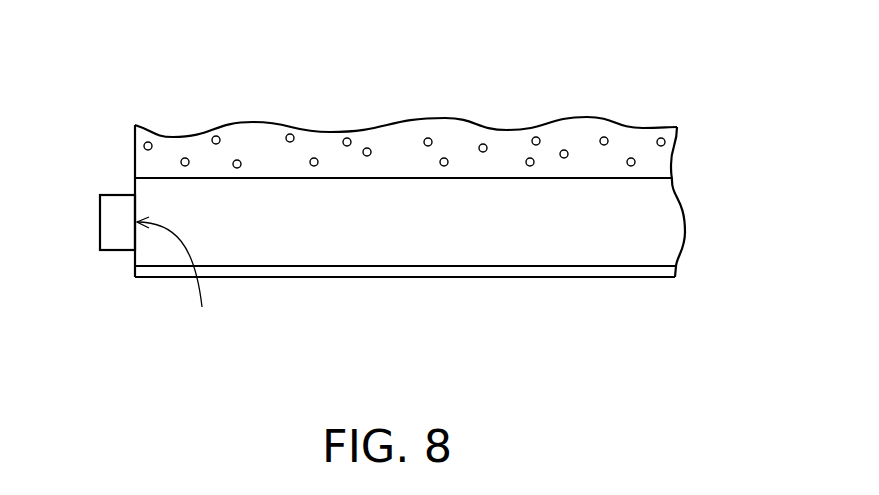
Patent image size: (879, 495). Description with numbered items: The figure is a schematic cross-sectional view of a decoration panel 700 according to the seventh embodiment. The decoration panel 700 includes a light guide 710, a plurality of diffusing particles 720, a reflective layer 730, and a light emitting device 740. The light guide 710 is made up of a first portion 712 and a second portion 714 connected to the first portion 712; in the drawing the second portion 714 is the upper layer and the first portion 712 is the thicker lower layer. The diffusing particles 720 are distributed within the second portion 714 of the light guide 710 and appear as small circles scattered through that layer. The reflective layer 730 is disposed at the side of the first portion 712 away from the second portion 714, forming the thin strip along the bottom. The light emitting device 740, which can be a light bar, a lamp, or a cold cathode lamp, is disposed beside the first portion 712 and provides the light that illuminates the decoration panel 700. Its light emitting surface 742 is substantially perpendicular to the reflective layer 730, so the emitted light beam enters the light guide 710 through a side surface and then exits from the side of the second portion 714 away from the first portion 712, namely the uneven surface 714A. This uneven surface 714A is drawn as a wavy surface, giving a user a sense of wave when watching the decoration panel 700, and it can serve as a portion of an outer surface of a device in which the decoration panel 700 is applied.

The decoration panel 700 is at (725, 347).
The light guide 710 is at (762, 141).
The first portion 712 is at (658, 238).
The second portion 714 is at (658, 163).
The uneven surface 714A is at (497, 128).
The diffusing particles 720 is at (217, 134).
The reflective layer 730 is at (502, 243).
The light emitting device 740 is at (118, 223).
The light emitting surface 742 is at (175, 283).